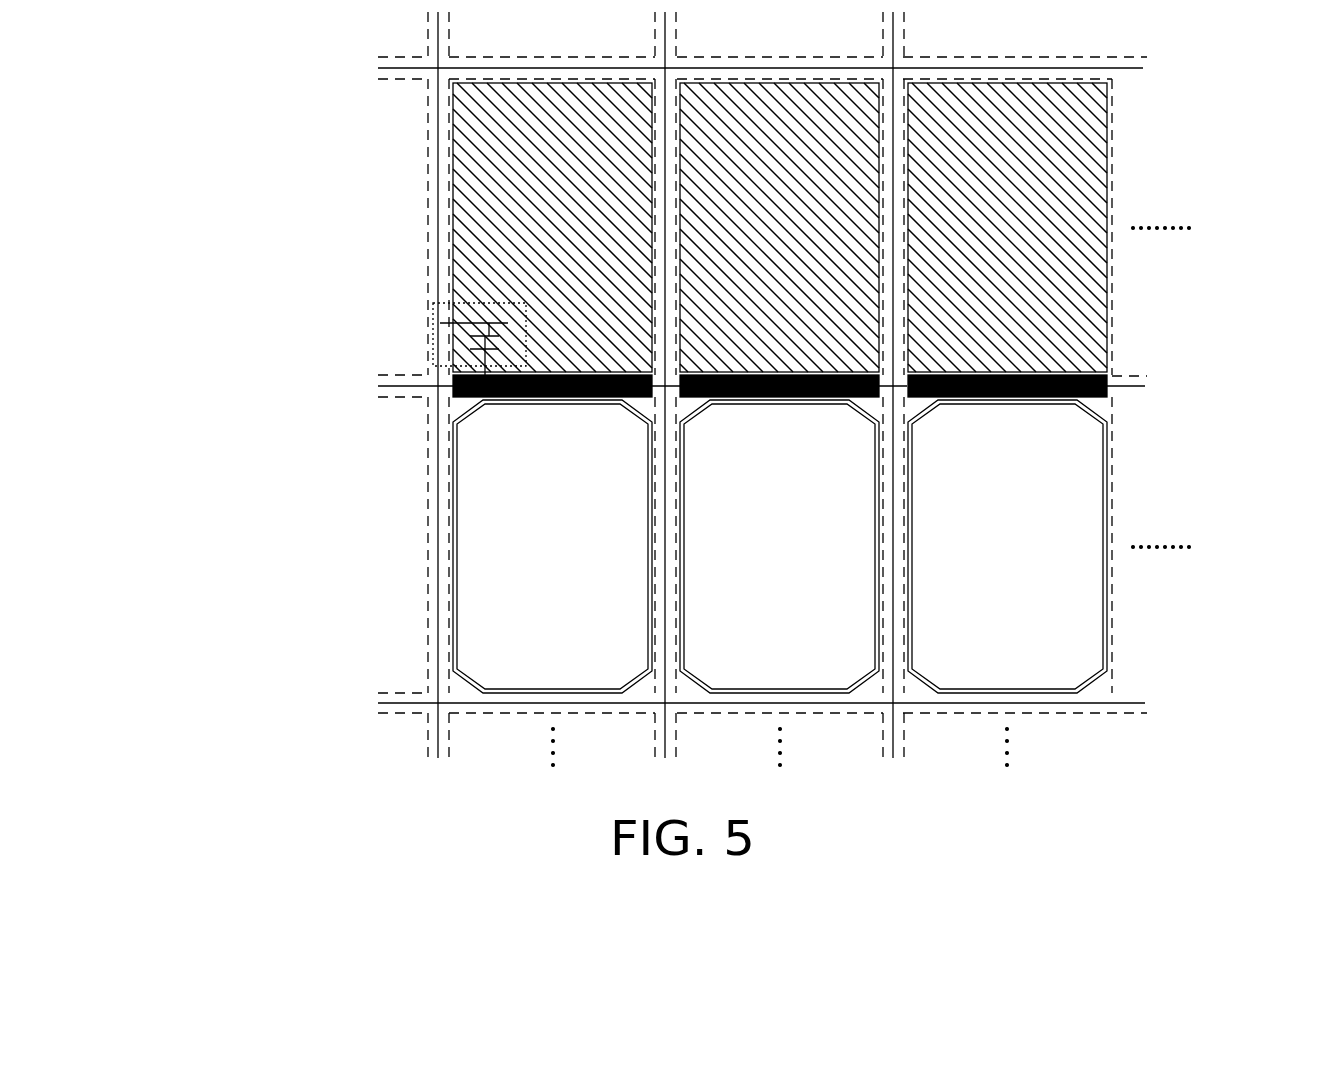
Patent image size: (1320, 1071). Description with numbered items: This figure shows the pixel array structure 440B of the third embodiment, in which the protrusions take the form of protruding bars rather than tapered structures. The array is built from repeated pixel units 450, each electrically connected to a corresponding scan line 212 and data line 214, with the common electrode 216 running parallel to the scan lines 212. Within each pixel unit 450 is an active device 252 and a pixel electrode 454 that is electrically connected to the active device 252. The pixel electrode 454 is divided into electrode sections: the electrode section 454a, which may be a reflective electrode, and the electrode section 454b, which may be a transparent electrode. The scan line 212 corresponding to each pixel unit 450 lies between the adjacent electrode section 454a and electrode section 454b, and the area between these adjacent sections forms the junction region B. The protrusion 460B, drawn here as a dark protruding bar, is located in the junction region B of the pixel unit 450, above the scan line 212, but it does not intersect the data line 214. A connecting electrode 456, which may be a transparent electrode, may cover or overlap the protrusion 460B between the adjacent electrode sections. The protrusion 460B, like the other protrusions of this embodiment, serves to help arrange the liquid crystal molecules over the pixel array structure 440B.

The pixel unit 450 is at (409, 388).
The pixel electrode 454 is at (449, 249).
The electrode section 454a is at (485, 213).
The electrode section 454b is at (481, 249).
The connecting electrode 456 is at (552, 372).
The active device 252 is at (433, 335).
The junction region B is at (378, 375).
The protrusion 460B is at (676, 335).
The scan line 212 is at (1117, 385).
The data line 214 is at (438, 605).
The common electrode 216 is at (510, 703).
The pixel array structure 440B is at (743, 389).